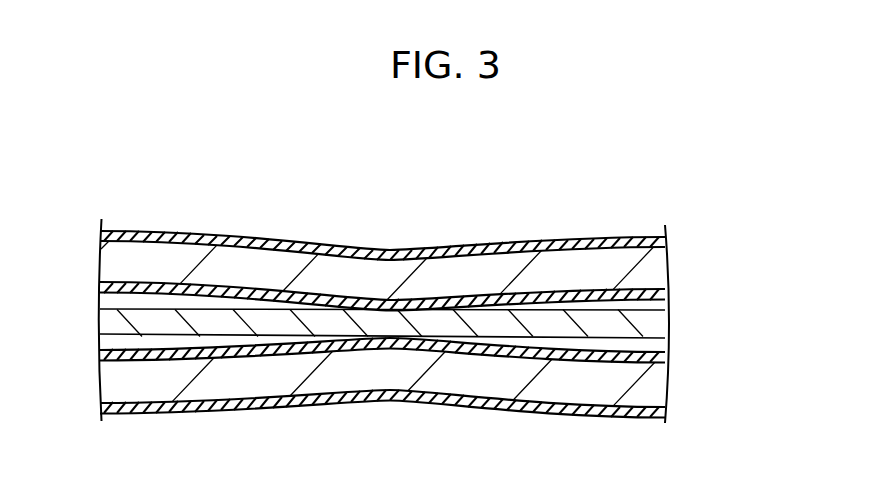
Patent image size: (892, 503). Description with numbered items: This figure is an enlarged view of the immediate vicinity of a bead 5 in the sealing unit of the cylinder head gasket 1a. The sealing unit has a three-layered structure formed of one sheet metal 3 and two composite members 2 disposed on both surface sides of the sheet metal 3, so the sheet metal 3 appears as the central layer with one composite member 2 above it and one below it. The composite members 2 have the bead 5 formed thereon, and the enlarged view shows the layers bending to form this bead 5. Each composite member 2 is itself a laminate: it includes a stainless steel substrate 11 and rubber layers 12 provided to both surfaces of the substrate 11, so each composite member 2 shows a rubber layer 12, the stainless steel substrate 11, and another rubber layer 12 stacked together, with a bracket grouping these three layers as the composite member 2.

The cylinder head gasket 1a is at (654, 195).
The composite member 2 is at (435, 325).
The sheet metal 3 is at (657, 325).
The bead 5 is at (410, 285).
The stainless steel substrate 11 is at (650, 268).
The rubber layer 12 is at (665, 241).